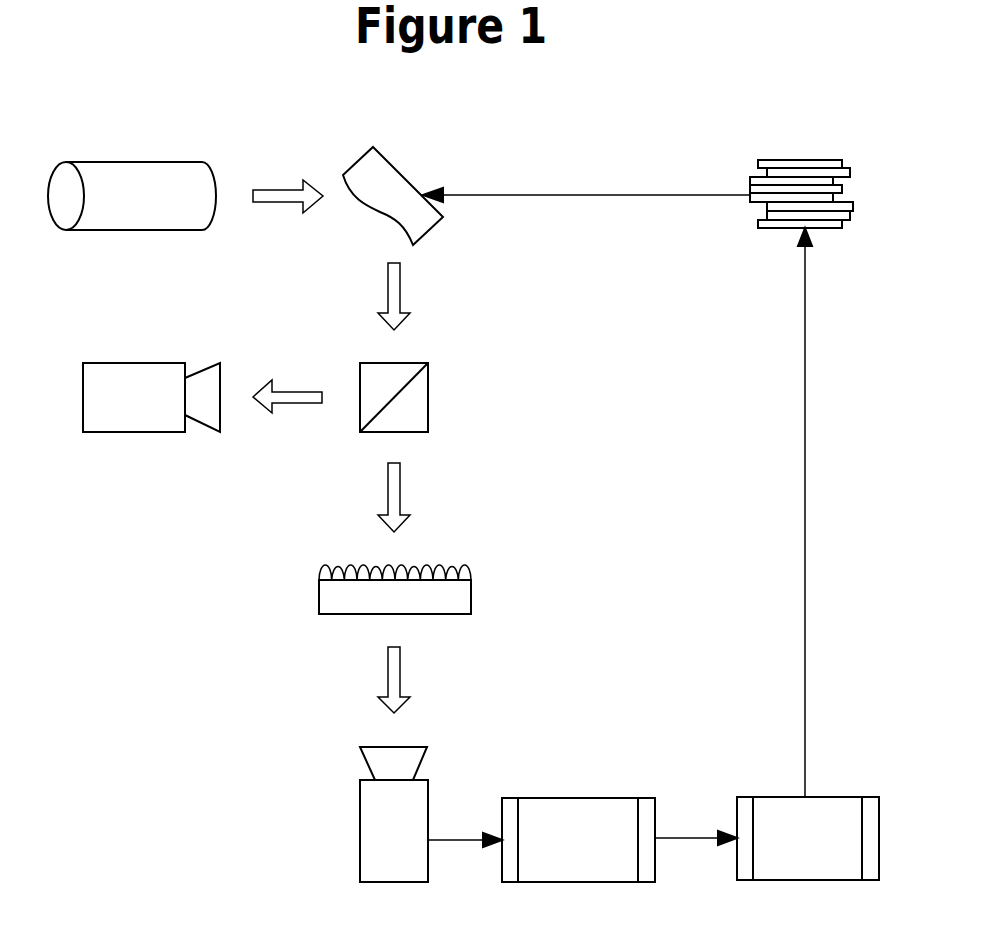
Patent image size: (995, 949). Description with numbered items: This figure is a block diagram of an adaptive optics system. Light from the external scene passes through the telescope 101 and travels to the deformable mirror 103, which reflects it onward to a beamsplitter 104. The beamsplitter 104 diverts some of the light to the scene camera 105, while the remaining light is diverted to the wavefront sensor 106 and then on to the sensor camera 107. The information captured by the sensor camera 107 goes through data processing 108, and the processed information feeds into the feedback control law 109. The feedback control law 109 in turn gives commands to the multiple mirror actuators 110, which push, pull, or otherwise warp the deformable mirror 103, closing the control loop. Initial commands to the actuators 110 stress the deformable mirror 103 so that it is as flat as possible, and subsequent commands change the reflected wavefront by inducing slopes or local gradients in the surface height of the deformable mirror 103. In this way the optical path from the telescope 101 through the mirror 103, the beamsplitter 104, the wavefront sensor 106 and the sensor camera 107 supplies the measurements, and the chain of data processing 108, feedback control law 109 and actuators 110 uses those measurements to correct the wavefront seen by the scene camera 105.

The telescope 101 is at (129, 171).
The deformable mirror 103 is at (421, 179).
The beamsplitter 104 is at (352, 373).
The scene camera 105 is at (131, 373).
The wavefront sensor 106 is at (374, 565).
The sensor camera 107 is at (352, 790).
The data processing 108 is at (568, 815).
The feedback control law 109 is at (780, 554).
The actuators 110 is at (638, 160).